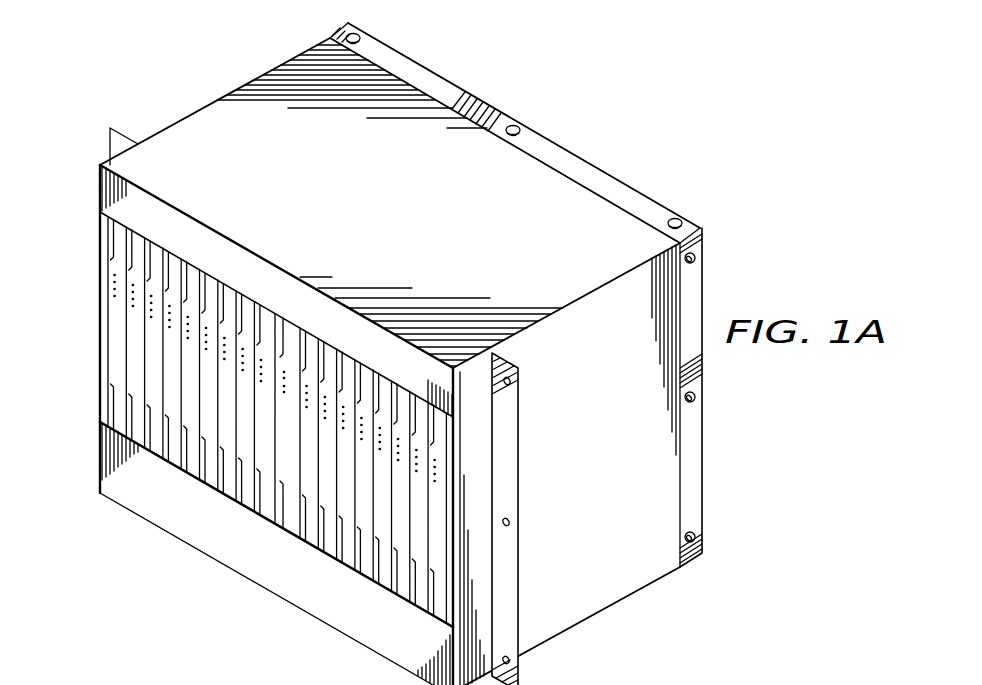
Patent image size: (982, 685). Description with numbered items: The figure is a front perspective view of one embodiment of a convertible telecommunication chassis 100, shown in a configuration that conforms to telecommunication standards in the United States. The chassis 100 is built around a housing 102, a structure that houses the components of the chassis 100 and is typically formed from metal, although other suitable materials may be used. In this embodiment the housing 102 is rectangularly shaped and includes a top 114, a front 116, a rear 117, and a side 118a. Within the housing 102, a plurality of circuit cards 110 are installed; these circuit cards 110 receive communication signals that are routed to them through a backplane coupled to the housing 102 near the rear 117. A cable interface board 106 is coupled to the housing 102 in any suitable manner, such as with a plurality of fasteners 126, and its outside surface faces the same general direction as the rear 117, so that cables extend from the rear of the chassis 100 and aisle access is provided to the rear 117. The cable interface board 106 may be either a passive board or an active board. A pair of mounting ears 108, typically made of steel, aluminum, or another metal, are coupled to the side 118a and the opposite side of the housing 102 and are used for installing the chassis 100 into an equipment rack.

The chassis 100 is at (632, 104).
The housing 102 is at (100, 165).
The cable interface board 106 is at (630, 196).
The mounting ears 108 is at (120, 135).
The circuit cards 110 is at (135, 363).
The top 114 is at (410, 217).
The front 116 is at (386, 586).
The rear 117 is at (538, 153).
The side 118a is at (630, 541).
The fasteners 126 is at (345, 30).